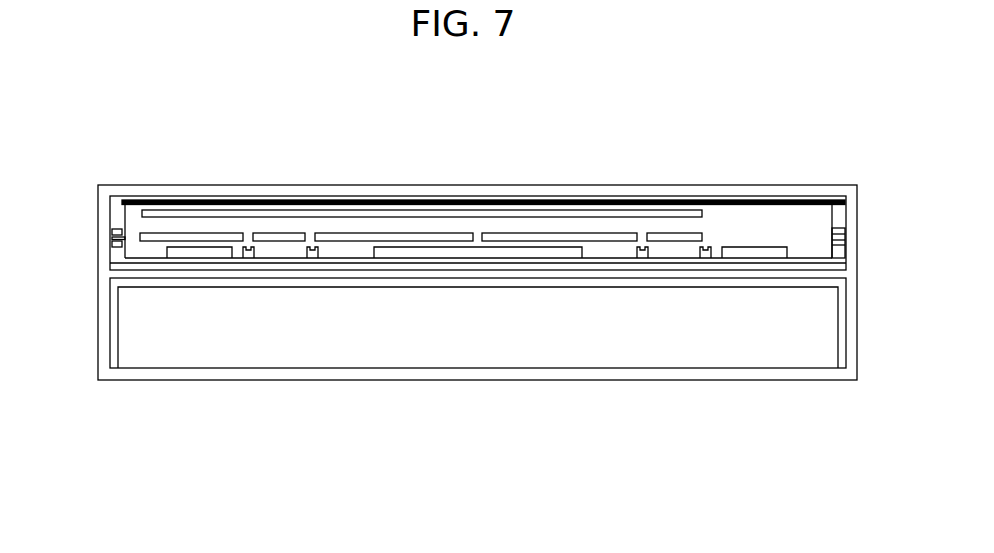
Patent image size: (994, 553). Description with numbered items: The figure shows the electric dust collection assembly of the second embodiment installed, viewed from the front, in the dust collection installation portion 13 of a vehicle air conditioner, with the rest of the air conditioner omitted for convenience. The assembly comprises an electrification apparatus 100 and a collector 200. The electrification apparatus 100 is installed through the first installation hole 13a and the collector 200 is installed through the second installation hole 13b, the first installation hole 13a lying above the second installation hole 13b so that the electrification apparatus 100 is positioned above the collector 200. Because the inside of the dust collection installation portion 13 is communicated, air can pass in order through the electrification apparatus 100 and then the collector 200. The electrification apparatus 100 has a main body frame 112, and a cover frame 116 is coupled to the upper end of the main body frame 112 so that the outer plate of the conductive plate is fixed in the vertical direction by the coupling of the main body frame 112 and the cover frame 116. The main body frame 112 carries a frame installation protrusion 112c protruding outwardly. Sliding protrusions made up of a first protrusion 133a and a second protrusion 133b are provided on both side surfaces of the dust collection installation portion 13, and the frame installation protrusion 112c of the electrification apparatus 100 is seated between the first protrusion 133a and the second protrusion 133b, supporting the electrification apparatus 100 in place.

The electrification apparatus 100 is at (257, 195).
The cover frame 116 is at (315, 210).
The main body frame 112 is at (742, 228).
The frame installation protrusion 112c is at (113, 238).
The dust collection installation portion 13 is at (781, 190).
The first installation hole 13a is at (840, 218).
The second installation hole 13b is at (844, 328).
The first protrusion 133a is at (115, 229).
The second protrusion 133b is at (113, 245).
The collector 200 is at (475, 338).